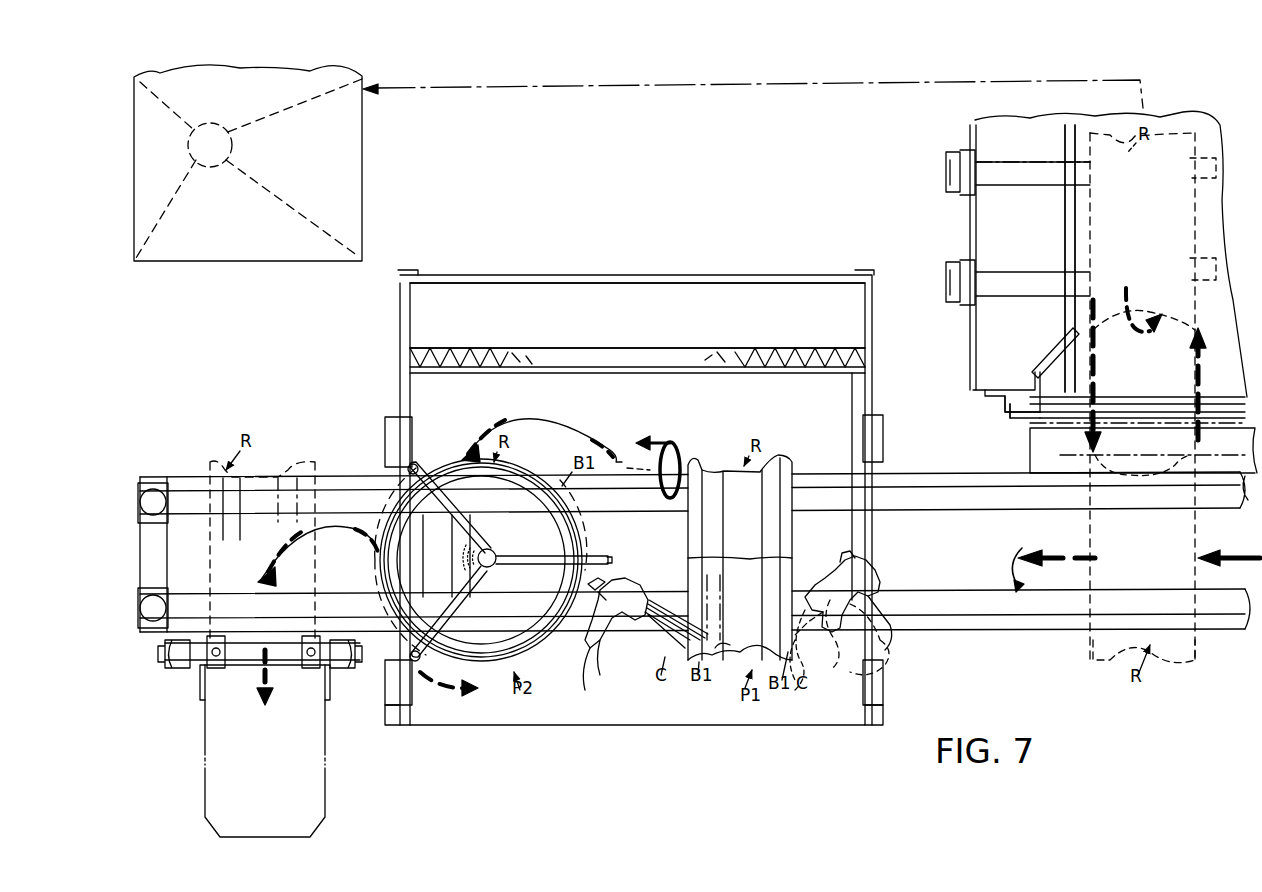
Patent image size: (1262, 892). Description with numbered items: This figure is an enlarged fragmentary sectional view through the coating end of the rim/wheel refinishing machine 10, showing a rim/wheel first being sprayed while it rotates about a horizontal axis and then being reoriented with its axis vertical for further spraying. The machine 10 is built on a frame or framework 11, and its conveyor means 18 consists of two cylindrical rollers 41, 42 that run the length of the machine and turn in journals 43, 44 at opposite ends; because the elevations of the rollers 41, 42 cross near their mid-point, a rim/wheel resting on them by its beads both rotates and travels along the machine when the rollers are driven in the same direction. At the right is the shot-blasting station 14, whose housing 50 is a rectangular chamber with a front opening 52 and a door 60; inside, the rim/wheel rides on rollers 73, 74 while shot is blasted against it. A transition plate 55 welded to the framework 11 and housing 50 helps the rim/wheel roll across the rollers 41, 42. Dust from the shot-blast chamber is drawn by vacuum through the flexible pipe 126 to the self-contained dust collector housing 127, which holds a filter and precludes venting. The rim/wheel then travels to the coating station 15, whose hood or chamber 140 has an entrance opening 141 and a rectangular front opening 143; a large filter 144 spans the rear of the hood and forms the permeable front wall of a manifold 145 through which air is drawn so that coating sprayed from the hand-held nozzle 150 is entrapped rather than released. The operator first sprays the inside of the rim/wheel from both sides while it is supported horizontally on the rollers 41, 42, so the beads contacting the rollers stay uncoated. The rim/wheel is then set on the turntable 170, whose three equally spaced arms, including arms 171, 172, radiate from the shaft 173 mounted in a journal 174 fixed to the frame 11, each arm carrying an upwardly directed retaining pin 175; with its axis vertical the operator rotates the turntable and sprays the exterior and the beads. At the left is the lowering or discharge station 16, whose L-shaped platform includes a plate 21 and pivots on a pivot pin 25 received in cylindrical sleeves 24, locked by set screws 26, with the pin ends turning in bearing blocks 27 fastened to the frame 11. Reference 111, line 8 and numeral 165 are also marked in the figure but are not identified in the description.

The dust collector housing 127 is at (250, 239).
The flexible pipe 126 is at (625, 88).
The machine 10 is at (835, 176).
The shot-blasting station 14 is at (1183, 112).
The housing 50 is at (968, 219).
The roller 73 is at (1020, 180).
The roller 74 is at (1012, 292).
The support plate 111 is at (1080, 230).
The opening 52 is at (1122, 398).
The door 60 is at (1028, 428).
The plate 55 is at (1042, 456).
The coating station 15 is at (772, 272).
The manifold 145 is at (601, 297).
The filter 144 is at (512, 355).
The hood 140 is at (430, 396).
The front opening 143 is at (405, 442).
The entrance opening 141 is at (880, 446).
The roller 41 is at (335, 494).
The roller 42 is at (215, 599).
The frame 11 is at (1001, 632).
The conveyor means 18 is at (1068, 512).
The journal 43 is at (152, 486).
The journal 44 is at (150, 629).
The section line 8 is at (385, 575).
The pivot pin 25 is at (200, 662).
The set screws 26 is at (225, 638).
The bearing blocks 27 is at (172, 668).
The cylindrical sleeves 24 is at (228, 672).
The plate 21 is at (268, 752).
The lowering station 16 is at (328, 750).
The turntable 170 is at (528, 480).
The arm 171 is at (400, 492).
The arm 172 is at (448, 606).
The retaining pin 175 is at (417, 466).
The journal 174 is at (494, 553).
The shaft 173 is at (492, 569).
The spray nozzle 150 is at (600, 645).
The spray cloud 165 is at (843, 668).